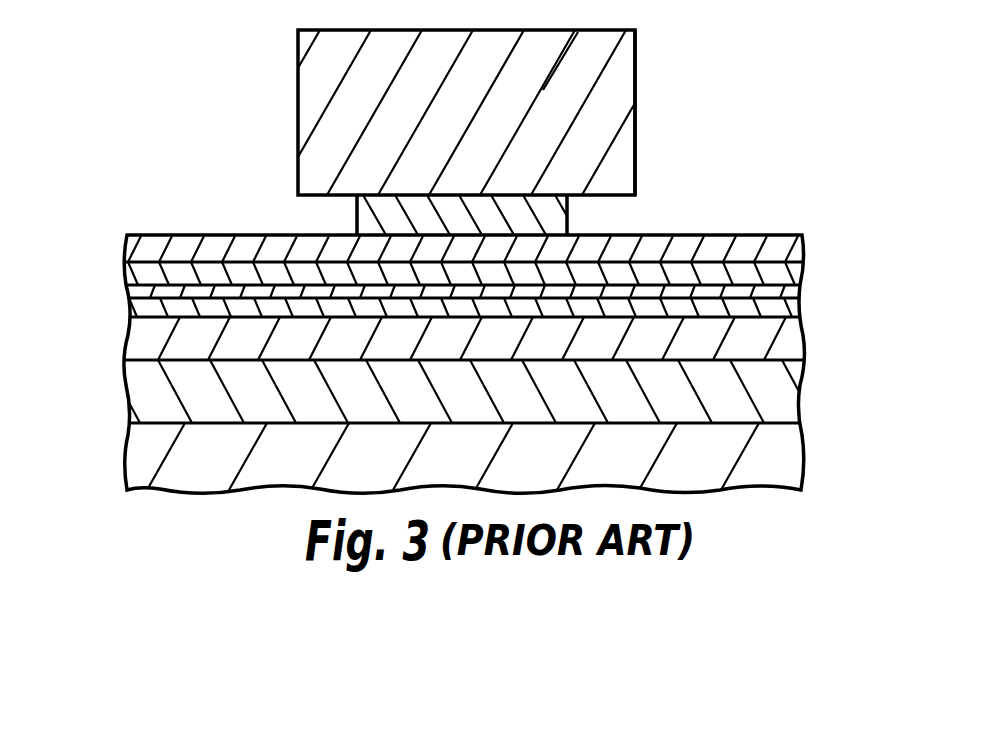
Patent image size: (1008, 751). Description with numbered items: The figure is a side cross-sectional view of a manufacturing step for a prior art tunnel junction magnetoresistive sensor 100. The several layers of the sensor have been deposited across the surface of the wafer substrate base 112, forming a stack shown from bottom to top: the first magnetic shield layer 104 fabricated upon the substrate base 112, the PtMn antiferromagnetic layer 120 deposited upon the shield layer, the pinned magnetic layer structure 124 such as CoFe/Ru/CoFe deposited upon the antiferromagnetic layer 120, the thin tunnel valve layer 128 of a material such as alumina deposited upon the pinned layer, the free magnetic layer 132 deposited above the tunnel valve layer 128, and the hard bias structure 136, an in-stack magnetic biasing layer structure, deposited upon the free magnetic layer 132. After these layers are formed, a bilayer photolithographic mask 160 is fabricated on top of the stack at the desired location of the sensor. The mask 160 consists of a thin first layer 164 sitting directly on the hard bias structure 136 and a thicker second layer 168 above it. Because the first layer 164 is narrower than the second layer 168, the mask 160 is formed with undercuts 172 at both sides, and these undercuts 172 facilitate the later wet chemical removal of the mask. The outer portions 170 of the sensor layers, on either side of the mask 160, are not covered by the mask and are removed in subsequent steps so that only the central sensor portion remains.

The magnetoresistive sensor 100 is at (280, 91).
The bilayer photolithographic mask 160 is at (648, 66).
The second layer 168 is at (675, 112).
The first layer 164 is at (483, 195).
The undercuts 172 is at (340, 214).
The outer portions 170 is at (218, 190).
The antiferromagnetic layer 120 is at (463, 281).
The hard bias structure 136 is at (465, 249).
The free magnetic layer 132 is at (465, 273).
The tunnel valve layer 128 is at (465, 291).
The pinned magnetic layer structure 124 is at (465, 307).
The first magnetic shield layer 104 is at (772, 391).
The substrate base 112 is at (772, 457).